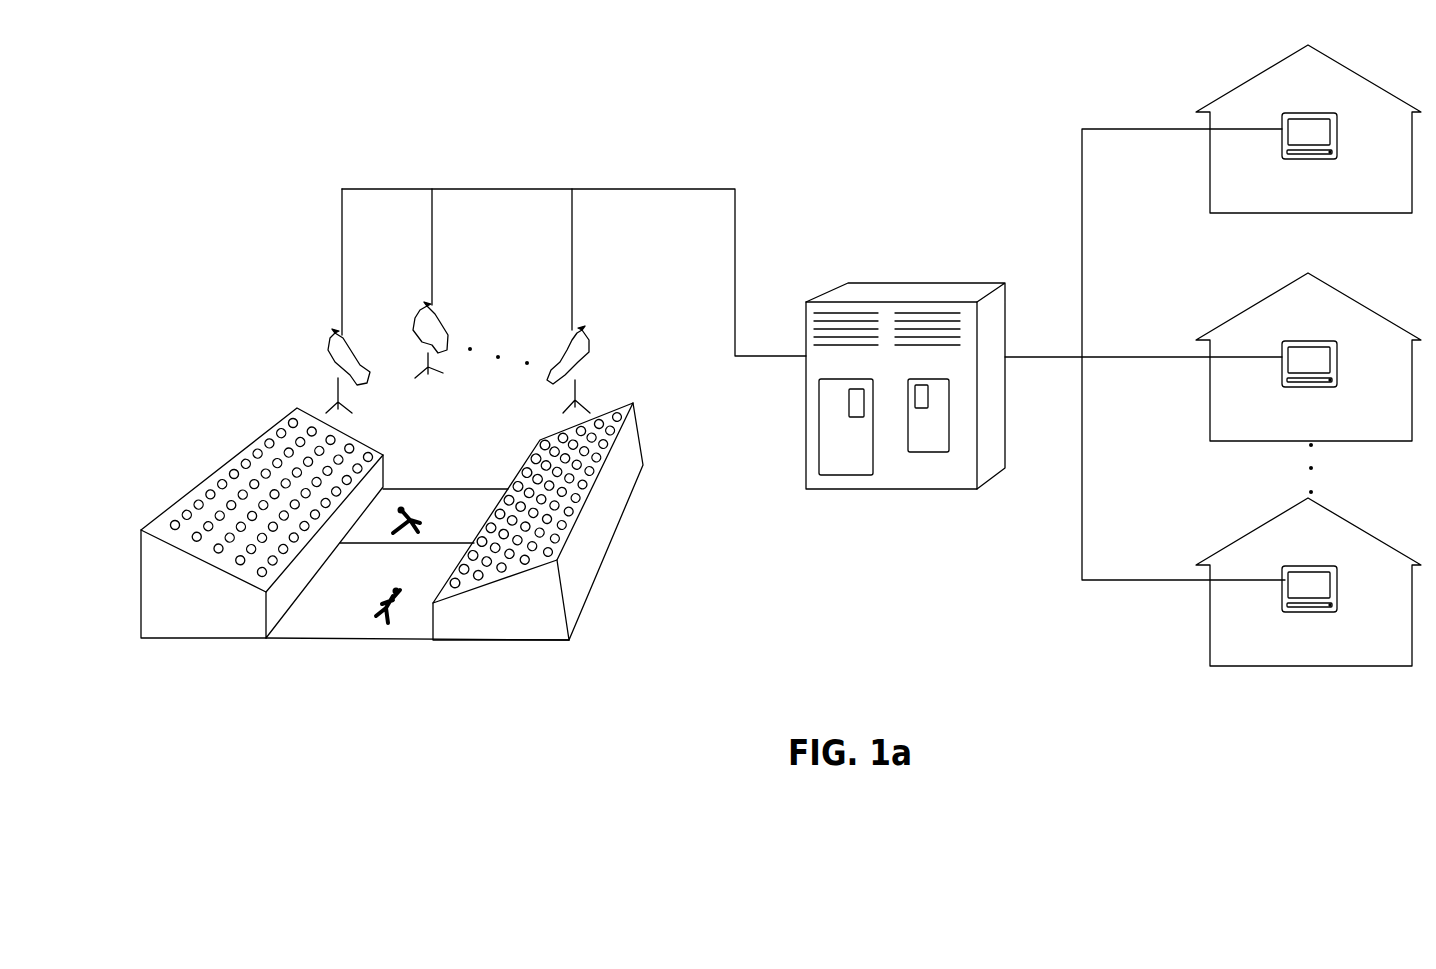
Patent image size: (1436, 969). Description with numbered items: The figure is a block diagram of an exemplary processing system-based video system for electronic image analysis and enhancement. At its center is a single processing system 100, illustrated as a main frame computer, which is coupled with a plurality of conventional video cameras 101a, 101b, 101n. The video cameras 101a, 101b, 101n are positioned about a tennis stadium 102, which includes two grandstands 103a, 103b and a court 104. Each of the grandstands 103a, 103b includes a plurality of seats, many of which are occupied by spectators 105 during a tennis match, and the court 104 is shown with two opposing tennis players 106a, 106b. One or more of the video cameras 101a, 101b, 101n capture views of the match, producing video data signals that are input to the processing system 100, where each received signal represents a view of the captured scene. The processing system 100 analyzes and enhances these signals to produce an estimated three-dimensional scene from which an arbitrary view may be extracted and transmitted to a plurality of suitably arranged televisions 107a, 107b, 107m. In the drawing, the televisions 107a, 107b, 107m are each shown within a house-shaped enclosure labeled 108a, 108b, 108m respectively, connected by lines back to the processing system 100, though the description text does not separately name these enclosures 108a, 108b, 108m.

The processing system 100 is at (933, 283).
The video camera 101a is at (330, 351).
The video camera 101b is at (436, 323).
The video camera 101n is at (587, 348).
The tennis stadium 102 is at (426, 581).
The grandstand 103a is at (262, 553).
The grandstand 103b is at (572, 554).
The court 104 is at (417, 596).
The spectators 105 is at (236, 472).
The tennis player 106a is at (361, 606).
The tennis player 106b is at (422, 522).
The television 107a is at (1309, 125).
The television 107b is at (1311, 351).
The television 107m is at (1312, 577).
The viewer home / subscriber location 108a is at (1308, 129).
The viewer home / subscriber location 108b is at (1308, 356).
The viewer home / subscriber location 108m is at (1308, 577).